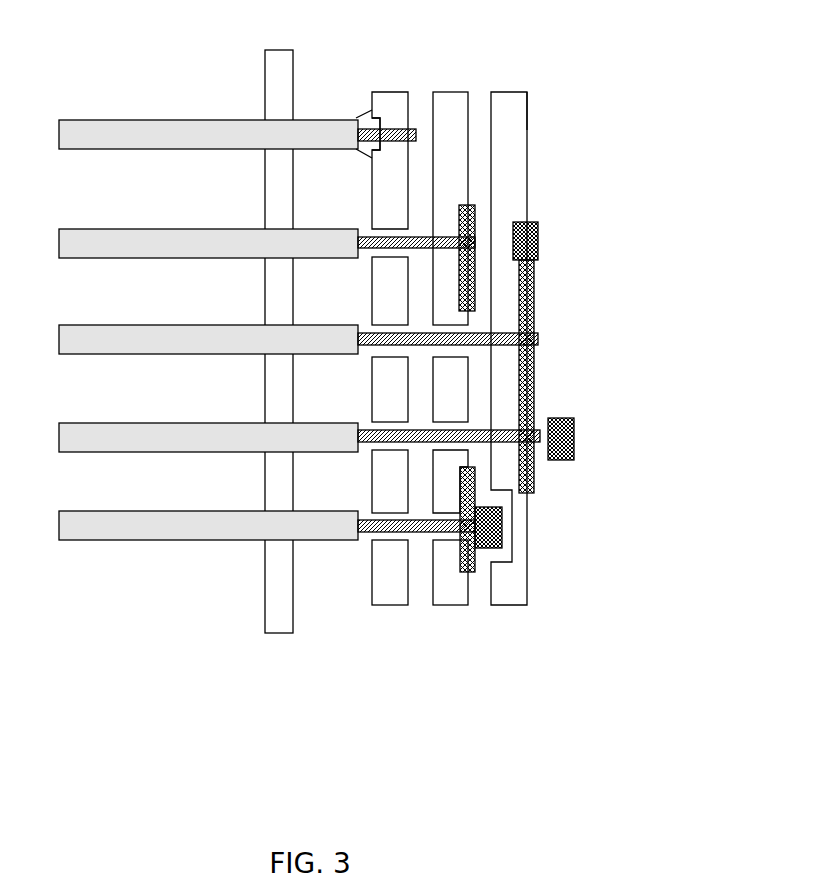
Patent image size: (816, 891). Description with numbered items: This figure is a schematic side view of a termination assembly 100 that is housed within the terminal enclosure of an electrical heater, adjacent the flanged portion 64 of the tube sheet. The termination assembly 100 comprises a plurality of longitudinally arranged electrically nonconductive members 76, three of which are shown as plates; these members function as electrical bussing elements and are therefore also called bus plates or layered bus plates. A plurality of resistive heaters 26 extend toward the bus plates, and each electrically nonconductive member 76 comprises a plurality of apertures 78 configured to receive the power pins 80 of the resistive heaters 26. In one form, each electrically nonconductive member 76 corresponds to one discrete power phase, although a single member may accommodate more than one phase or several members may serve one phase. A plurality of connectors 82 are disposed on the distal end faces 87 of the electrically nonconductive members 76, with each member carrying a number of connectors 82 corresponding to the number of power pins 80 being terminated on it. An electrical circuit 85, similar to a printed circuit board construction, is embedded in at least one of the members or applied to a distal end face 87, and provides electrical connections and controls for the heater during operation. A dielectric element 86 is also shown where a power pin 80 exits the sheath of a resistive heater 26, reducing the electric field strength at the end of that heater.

The resistive heater 26 is at (68, 146).
The flanged portion 64 is at (265, 602).
The electrically nonconductive member 76 is at (393, 92).
The aperture 78 is at (371, 231).
The power pin 80 is at (411, 129).
The connector 82 is at (538, 232).
The electrical circuit 85 is at (472, 205).
The dielectric element 86 is at (366, 119).
The distal end face 87 is at (530, 107).
The termination assembly 100 is at (388, 630).